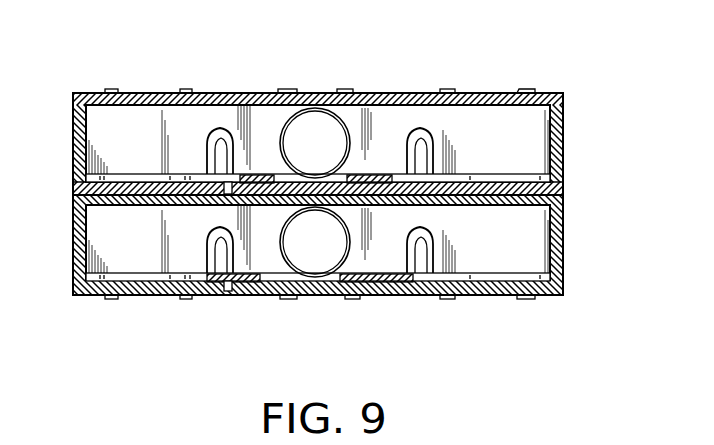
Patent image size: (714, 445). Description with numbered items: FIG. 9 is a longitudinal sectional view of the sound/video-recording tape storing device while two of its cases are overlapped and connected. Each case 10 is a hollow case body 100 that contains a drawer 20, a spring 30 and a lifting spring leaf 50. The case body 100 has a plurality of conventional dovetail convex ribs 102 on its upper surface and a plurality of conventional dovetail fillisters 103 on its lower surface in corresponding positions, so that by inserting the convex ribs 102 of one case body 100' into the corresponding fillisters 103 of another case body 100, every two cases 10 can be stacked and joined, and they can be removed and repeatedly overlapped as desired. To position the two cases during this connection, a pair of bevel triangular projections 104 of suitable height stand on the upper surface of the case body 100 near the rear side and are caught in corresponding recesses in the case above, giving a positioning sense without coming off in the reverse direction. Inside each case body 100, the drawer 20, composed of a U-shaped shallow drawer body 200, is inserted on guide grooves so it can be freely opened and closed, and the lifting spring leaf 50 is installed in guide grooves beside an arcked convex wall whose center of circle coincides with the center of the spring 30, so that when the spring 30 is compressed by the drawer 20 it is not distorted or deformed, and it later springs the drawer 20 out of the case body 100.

The case 10 is at (232, 92).
The drawer body 200 is at (252, 176).
The spring 30 is at (327, 89).
The lifting spring leaf 50 is at (350, 175).
The drawer 20 is at (390, 164).
The bevel triangular projection 104 is at (453, 89).
The dovetail convex rib 102 is at (522, 89).
The case body 100 is at (357, 144).
The case body 100' is at (357, 245).
The dovetail fillister 103 is at (345, 299).